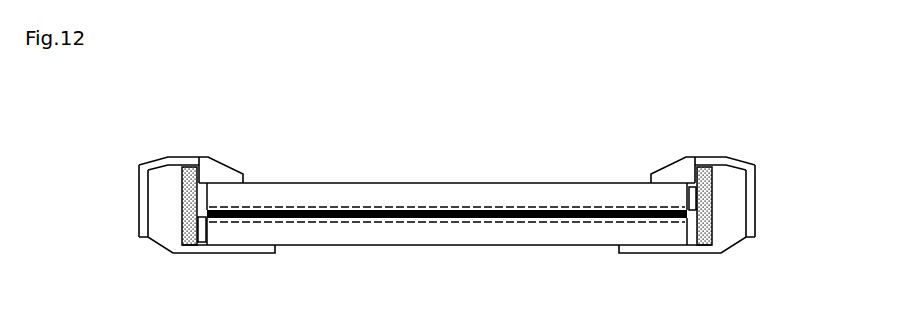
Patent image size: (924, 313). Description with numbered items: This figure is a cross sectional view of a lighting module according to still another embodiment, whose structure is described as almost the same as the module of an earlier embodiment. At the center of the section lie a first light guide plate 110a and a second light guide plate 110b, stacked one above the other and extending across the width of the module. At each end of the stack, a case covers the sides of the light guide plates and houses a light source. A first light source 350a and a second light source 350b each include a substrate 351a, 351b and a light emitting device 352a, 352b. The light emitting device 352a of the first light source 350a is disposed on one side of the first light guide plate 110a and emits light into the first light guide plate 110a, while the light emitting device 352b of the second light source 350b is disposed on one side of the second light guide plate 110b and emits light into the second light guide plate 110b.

The first light guide plate 110a is at (458, 195).
The second light guide plate 110b is at (458, 233).
The first light source 350a is at (661, 164).
The second light source 350b is at (233, 165).
The substrate 351a is at (696, 190).
The substrate 351b is at (198, 218).
The light emitting device 352a is at (692, 187).
The light emitting device 352b is at (201, 217).